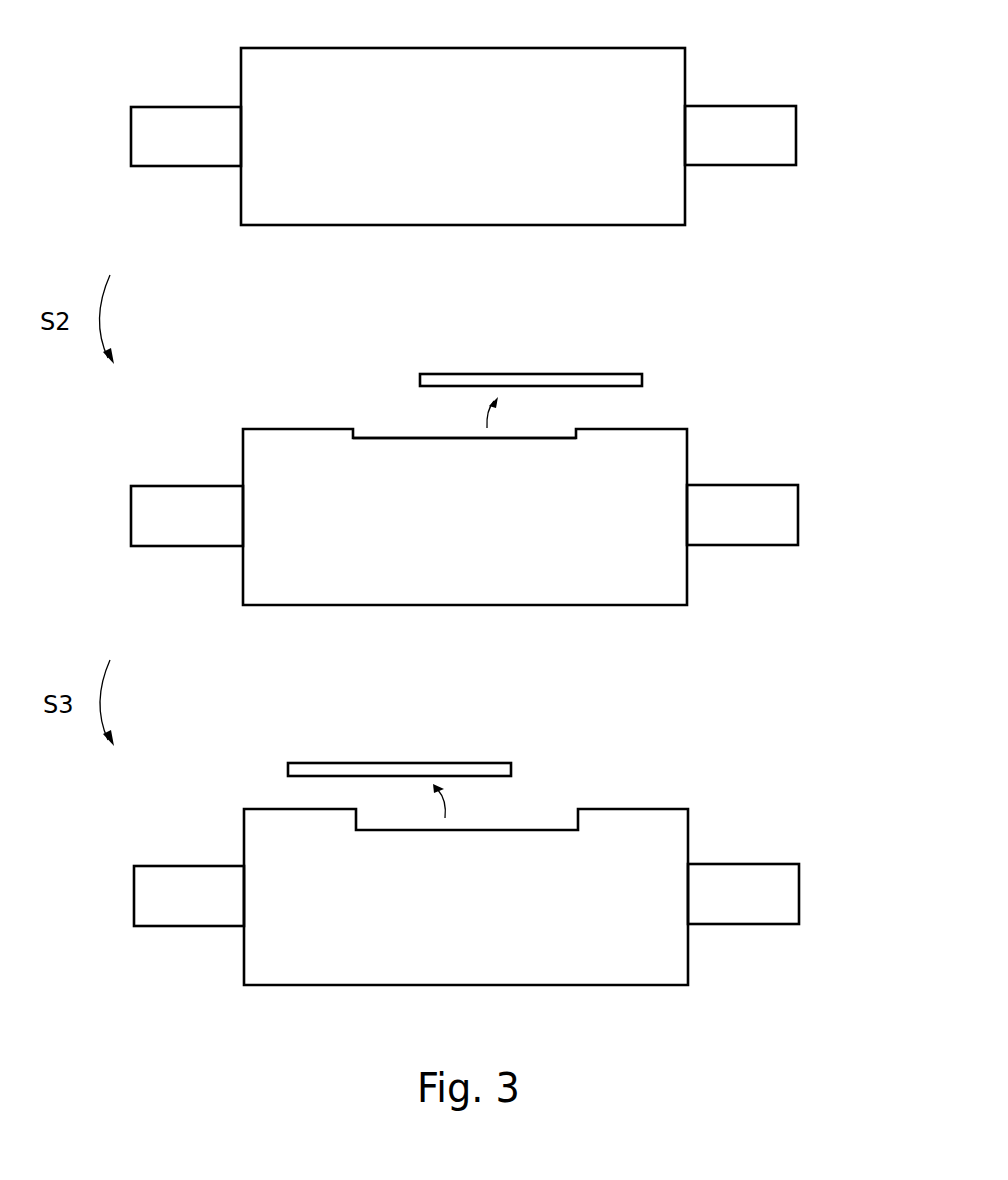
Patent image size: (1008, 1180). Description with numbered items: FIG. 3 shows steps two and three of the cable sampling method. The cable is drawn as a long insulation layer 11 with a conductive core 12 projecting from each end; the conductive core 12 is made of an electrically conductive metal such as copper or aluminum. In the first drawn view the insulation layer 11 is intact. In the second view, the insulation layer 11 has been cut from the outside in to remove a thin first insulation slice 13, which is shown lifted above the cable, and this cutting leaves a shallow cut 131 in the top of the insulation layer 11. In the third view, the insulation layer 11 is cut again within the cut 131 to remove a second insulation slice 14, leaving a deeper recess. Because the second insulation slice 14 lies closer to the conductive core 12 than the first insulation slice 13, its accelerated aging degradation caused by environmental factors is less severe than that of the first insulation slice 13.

The insulation layer 11 is at (649, 58).
The conductive core 12 is at (746, 118).
The first insulation slice 13 is at (442, 380).
The cut 131 is at (387, 438).
The second insulation slice 14 is at (489, 772).